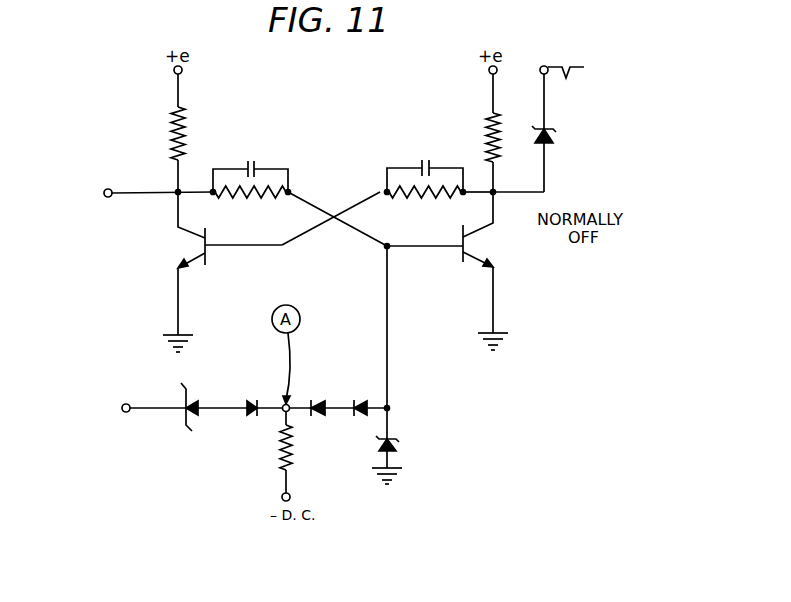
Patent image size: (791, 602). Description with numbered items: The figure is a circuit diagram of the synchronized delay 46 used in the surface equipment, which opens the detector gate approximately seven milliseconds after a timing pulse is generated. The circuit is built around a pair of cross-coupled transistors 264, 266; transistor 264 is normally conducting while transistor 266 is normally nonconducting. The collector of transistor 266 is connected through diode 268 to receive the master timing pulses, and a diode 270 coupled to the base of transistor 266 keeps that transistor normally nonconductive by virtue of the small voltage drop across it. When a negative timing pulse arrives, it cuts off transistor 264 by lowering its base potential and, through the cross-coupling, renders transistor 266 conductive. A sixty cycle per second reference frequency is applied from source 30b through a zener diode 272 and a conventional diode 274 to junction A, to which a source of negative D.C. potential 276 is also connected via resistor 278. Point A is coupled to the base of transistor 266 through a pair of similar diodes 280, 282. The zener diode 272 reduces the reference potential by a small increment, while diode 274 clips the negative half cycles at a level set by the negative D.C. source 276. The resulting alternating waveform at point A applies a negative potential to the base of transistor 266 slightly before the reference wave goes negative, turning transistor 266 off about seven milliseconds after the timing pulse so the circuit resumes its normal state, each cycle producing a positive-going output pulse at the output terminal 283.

The synchronized delay 46 is at (68, 316).
The output terminal 283 is at (108, 197).
The transistor 264 is at (206, 264).
The transistor 266 is at (462, 232).
The diode 268 is at (554, 136).
The diode 270 is at (398, 447).
The zener diode 272 is at (205, 396).
The conventional diode 274 is at (250, 418).
The source of negative D.C. potential 276 is at (290, 495).
The resistor 278 is at (281, 465).
The diode 280 is at (331, 392).
The diode 282 is at (358, 418).
The source 30b is at (125, 412).